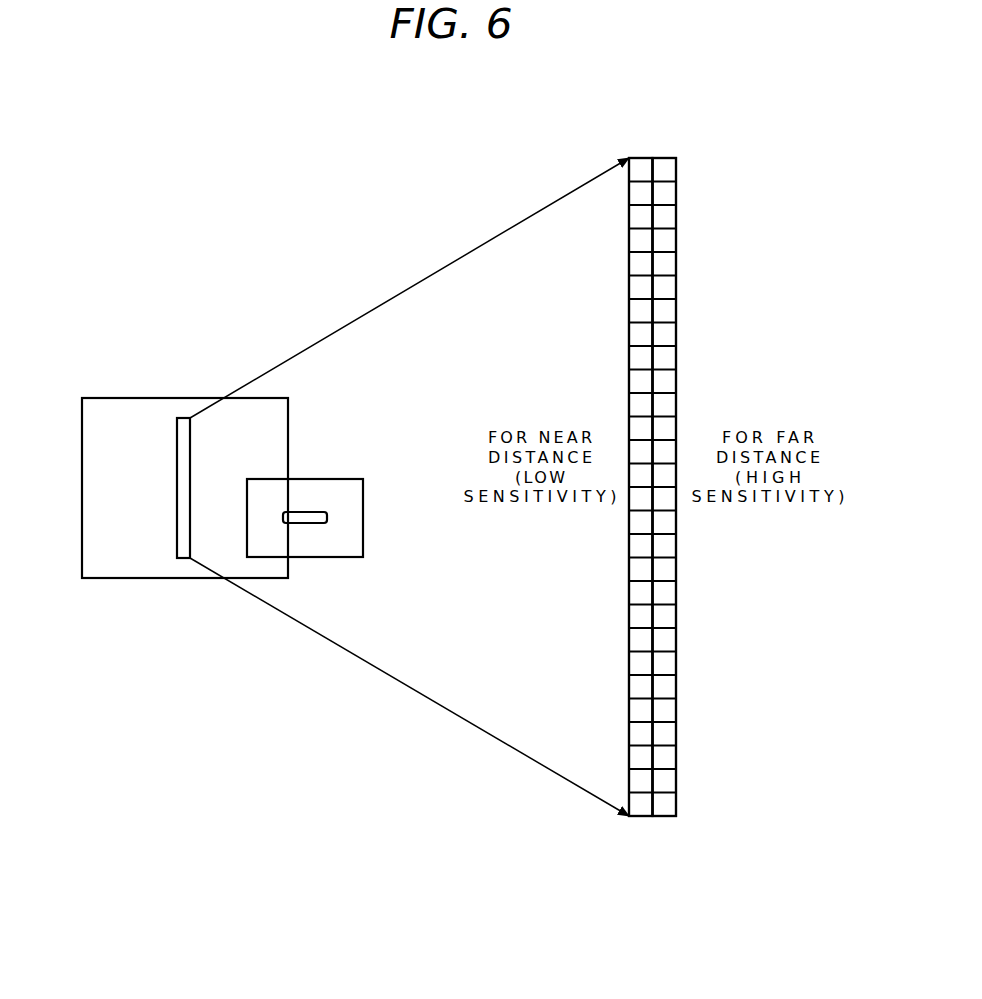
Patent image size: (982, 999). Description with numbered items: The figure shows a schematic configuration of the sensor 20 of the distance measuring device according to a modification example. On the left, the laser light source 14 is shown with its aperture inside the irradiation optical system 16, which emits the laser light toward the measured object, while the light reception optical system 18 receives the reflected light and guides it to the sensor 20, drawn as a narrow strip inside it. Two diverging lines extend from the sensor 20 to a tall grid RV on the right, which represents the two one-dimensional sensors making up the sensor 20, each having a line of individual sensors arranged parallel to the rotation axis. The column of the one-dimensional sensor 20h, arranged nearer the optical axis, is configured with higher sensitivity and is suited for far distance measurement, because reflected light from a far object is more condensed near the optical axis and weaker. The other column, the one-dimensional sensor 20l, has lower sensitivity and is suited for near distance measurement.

The laser light source 14 is at (305, 522).
The irradiation optical system 16 is at (327, 488).
The light reception optical system 18 is at (141, 407).
The sensor 20 is at (185, 479).
The one-dimensional sensor (low-sensitivity) 20l is at (640, 153).
The one-dimensional sensor (high-sensitivity) 20h is at (663, 153).
The reference view / pixel array RV is at (668, 259).